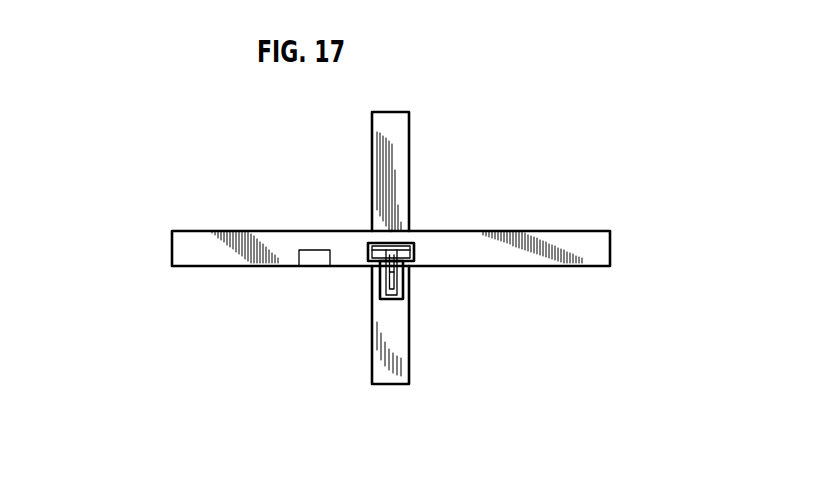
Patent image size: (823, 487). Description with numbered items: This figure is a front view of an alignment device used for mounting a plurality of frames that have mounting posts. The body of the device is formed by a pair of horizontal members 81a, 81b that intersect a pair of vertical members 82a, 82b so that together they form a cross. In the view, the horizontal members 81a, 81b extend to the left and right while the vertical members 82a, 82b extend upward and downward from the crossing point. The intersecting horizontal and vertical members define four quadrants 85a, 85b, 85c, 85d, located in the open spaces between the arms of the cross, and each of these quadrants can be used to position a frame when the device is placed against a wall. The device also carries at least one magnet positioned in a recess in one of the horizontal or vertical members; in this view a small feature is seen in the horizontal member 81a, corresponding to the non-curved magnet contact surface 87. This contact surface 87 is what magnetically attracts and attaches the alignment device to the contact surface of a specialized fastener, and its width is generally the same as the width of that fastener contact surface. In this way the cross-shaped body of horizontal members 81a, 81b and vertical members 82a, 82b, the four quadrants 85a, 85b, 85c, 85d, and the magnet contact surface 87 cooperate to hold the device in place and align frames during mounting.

The horizontal member 81a is at (187, 255).
The horizontal member 81b is at (588, 250).
The vertical member 82a is at (385, 372).
The vertical member 82b is at (393, 123).
The quadrant 85a is at (258, 310).
The quadrant 85b is at (460, 297).
The quadrant 85c is at (460, 173).
The quadrant 85d is at (288, 203).
The magnet contact surface 87 is at (315, 267).